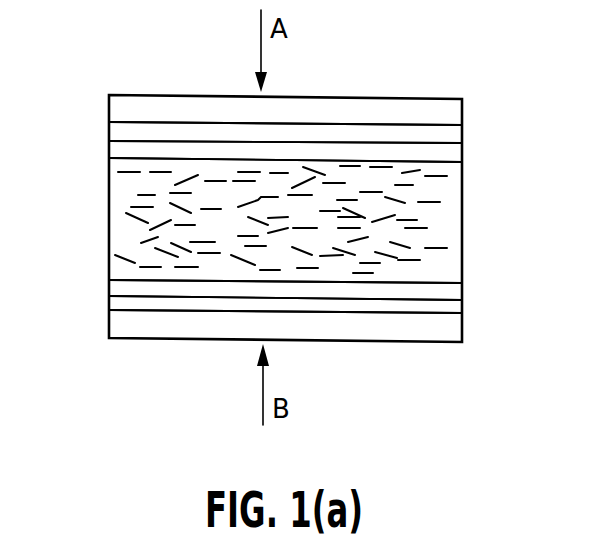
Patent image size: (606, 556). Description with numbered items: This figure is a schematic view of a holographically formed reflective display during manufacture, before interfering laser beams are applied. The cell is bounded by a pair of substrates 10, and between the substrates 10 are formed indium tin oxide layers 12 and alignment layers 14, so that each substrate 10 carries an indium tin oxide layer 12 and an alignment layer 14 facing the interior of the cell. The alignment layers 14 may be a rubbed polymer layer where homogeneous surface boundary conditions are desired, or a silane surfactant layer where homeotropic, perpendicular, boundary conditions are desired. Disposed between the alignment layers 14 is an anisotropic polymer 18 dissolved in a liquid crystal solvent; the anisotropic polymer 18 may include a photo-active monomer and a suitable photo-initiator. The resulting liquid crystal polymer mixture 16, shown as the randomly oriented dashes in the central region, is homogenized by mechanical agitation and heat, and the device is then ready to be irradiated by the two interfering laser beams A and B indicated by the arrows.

The substrate 10 is at (120, 103).
The indium tin oxide layer 12 is at (455, 131).
The alignment layer 14 is at (108, 147).
The liquid crystal polymer mixture 16 is at (120, 201).
The anisotropic polymer 18 is at (132, 236).